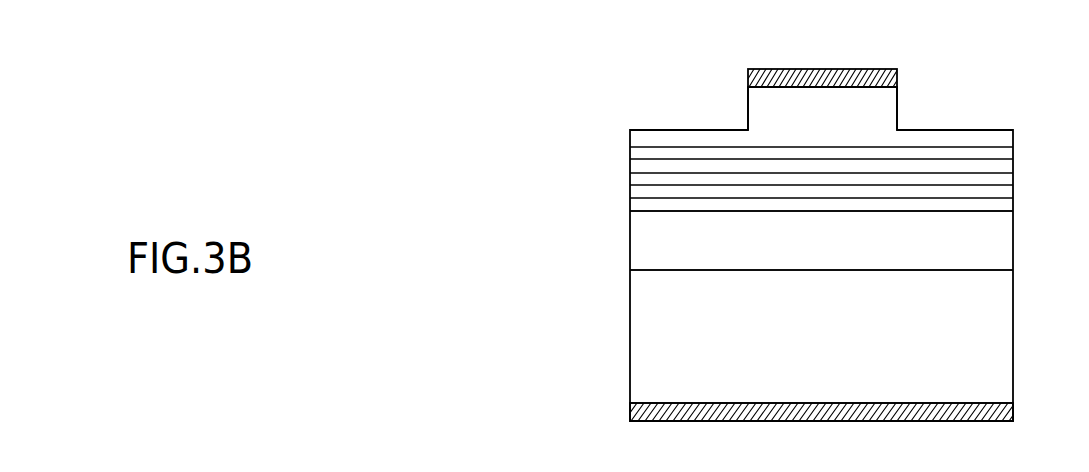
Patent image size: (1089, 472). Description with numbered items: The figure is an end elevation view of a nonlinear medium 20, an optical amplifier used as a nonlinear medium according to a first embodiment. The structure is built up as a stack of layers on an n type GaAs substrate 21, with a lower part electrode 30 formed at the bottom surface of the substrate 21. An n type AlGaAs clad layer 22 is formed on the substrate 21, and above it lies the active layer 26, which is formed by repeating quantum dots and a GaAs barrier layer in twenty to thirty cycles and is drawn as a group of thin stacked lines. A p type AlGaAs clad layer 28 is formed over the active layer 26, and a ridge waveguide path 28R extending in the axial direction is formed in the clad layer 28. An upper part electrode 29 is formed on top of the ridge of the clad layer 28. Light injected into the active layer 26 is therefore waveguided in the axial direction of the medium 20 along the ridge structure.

The nonlinear medium 20 is at (829, 42).
The substrate 21 is at (1010, 342).
The clad layer 22 is at (1010, 242).
The active layer 26 is at (1032, 147).
The clad layer 28 is at (1010, 135).
The ridge waveguide path 28R is at (849, 132).
The upper part electrode 29 is at (898, 73).
The lower part electrode 30 is at (1014, 411).